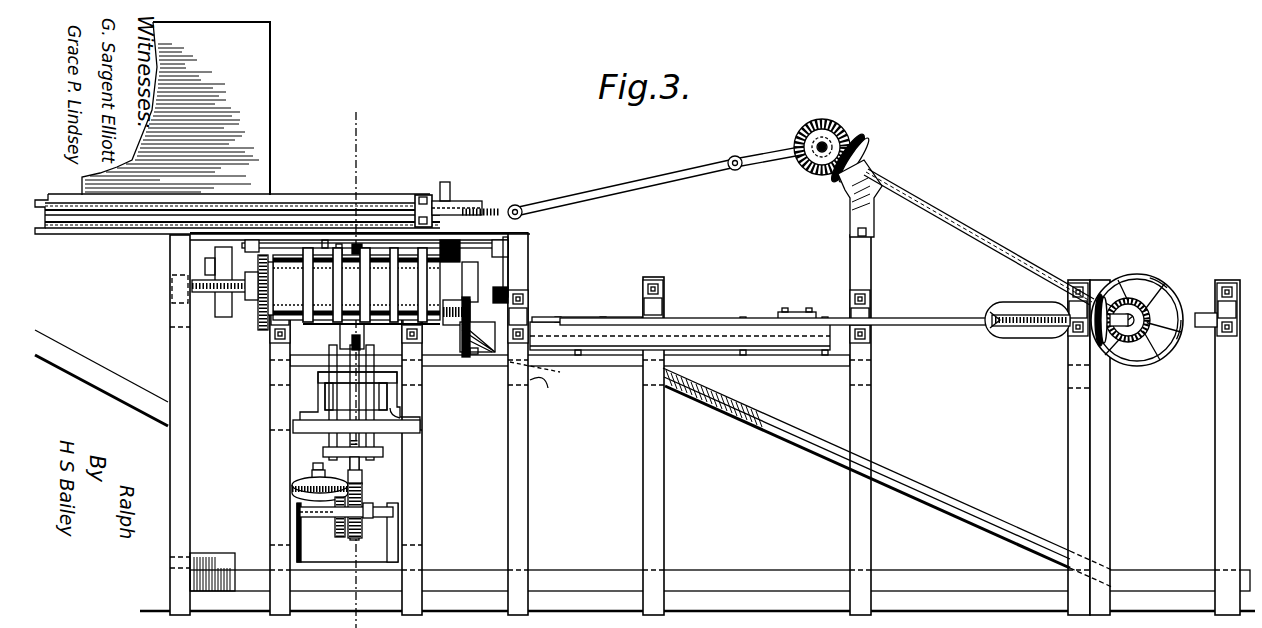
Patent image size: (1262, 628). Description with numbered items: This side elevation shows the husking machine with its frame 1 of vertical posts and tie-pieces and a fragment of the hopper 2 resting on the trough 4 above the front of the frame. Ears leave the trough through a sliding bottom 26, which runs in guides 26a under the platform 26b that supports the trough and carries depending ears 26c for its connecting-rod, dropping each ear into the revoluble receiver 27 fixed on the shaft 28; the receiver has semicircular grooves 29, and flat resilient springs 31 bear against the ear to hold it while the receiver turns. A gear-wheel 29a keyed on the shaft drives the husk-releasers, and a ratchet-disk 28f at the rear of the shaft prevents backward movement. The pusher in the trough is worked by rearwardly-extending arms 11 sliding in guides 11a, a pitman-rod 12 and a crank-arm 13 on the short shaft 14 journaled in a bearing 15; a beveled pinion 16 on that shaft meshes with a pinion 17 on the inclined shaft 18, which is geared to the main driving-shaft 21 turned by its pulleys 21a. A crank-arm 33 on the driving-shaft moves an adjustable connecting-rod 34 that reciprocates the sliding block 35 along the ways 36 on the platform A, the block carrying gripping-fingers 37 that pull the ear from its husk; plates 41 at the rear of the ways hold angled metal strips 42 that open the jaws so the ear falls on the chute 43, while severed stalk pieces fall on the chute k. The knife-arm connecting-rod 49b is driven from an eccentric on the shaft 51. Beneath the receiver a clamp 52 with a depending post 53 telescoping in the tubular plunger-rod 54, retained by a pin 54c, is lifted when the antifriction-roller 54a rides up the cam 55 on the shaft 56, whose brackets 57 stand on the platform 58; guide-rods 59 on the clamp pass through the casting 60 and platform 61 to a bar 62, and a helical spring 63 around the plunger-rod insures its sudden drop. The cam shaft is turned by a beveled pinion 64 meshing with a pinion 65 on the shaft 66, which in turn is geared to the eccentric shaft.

The frame 1 is at (142, 455).
The hopper 2 is at (250, 95).
The trough or guideway 4 is at (325, 202).
The rearwardly-extending arms 11 is at (127, 222).
The guides 11a is at (415, 205).
The pitman-rod 12 is at (578, 196).
The crank-arm 13 is at (768, 160).
The short shaft 14 is at (804, 140).
The bearing 15 is at (842, 180).
The beveled pinion 16 is at (830, 123).
The pinion 17 is at (866, 150).
The shaft 18 is at (948, 215).
The main driving-shaft 21 is at (1132, 318).
The pulleys 21a is at (1146, 363).
The sliding bottom or floor 26 is at (472, 240).
The guides 26a is at (553, 244).
The platform 26b is at (357, 223).
The depending ears 26c is at (340, 245).
The revoluble receiver 27 is at (323, 317).
The shaft 28 is at (246, 308).
The ratchet-disk 28f is at (503, 288).
The semicircular grooves 29 is at (350, 296).
The gear-wheel 29a is at (260, 332).
The flat resilient springs 31 is at (333, 310).
The crank-arm 33 is at (1027, 331).
The connecting-rod 34 is at (923, 323).
The sliding block 35 is at (545, 321).
The ways or guides 36 is at (677, 328).
The gripping-fingers 37 is at (462, 320).
The plates 41 is at (793, 322).
The metal strips 42 is at (797, 307).
The chute 43 is at (806, 428).
The connecting-rod 49b is at (362, 340).
The shaft 51 is at (1005, 318).
The clamp 52 is at (333, 310).
The depending post 53 is at (372, 345).
The plunger-rod 54 is at (323, 400).
The antifriction-roller 54a is at (354, 474).
The pin 54c is at (323, 398).
The cam 55 is at (360, 532).
The shaft 56 is at (400, 508).
The brackets 57 is at (297, 527).
The platform 58 is at (223, 563).
The guide-rods 59 is at (327, 438).
The casting 60 is at (420, 417).
The platform 61 is at (307, 425).
The bar 62 is at (380, 458).
The helical spring 63 is at (320, 463).
The beveled pinion 64 is at (337, 530).
The pinion 65 is at (297, 492).
The shaft 66 is at (317, 478).
The chute k is at (535, 385).
The platform A is at (600, 380).